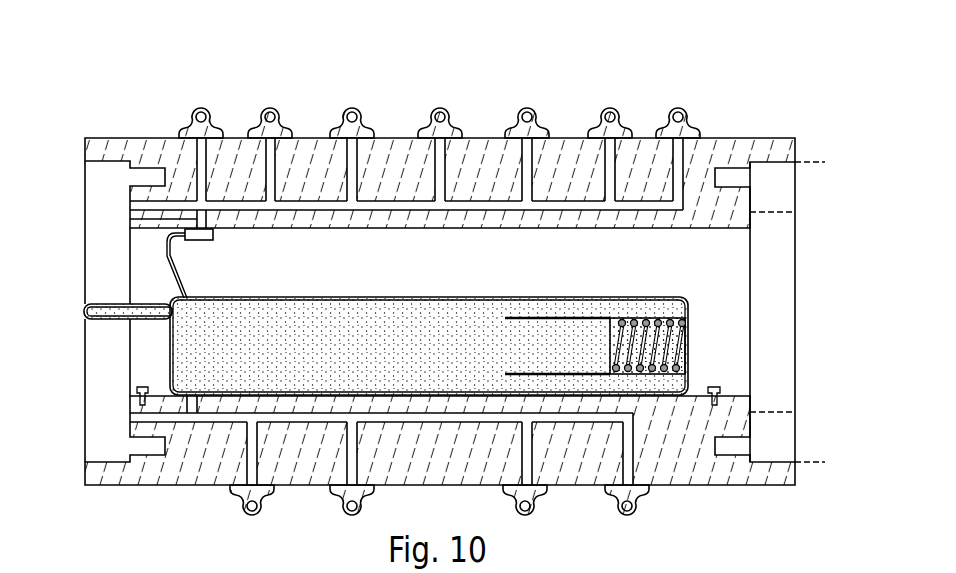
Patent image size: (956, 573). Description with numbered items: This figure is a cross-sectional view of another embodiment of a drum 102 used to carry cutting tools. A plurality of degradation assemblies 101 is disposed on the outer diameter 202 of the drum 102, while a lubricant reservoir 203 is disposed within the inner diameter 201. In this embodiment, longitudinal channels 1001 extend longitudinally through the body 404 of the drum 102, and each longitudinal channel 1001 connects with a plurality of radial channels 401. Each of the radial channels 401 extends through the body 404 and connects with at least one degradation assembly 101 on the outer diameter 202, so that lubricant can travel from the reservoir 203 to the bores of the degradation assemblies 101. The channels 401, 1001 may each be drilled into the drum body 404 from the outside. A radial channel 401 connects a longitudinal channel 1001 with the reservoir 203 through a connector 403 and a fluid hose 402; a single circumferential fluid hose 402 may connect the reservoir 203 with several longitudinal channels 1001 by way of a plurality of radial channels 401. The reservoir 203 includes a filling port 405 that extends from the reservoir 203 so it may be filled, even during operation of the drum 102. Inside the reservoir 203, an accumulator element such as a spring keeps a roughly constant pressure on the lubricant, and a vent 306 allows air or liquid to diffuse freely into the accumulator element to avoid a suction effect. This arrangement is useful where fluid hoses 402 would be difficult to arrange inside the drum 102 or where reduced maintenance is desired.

The drum 102 is at (216, 71).
The degradation assembly 101 is at (284, 128).
The longitudinal channel 1001 is at (388, 202).
The radial channel 401 is at (603, 175).
The body 404 is at (103, 150).
The fluid hose 402 is at (168, 262).
The connector 403 is at (213, 236).
The filling port 405 is at (112, 304).
The lubricant reservoir 203 is at (166, 376).
The inner diameter 201 is at (779, 212).
The outer diameter 202 is at (823, 462).
The vent 306 is at (694, 347).